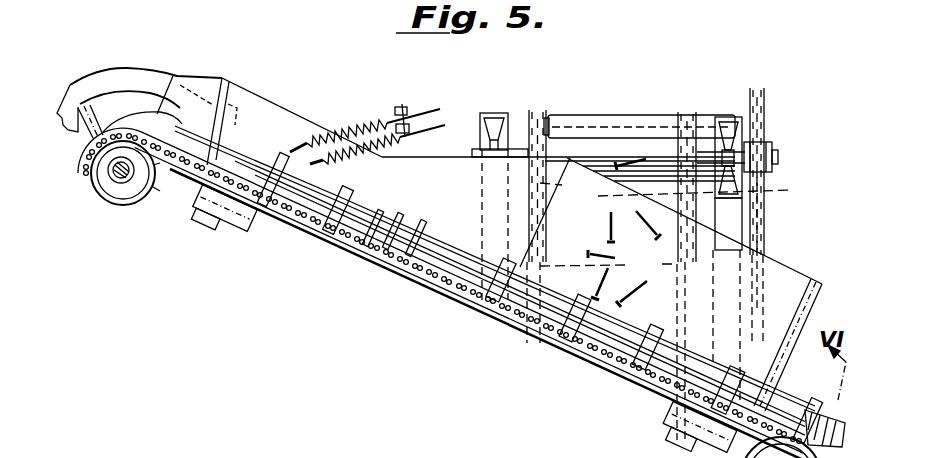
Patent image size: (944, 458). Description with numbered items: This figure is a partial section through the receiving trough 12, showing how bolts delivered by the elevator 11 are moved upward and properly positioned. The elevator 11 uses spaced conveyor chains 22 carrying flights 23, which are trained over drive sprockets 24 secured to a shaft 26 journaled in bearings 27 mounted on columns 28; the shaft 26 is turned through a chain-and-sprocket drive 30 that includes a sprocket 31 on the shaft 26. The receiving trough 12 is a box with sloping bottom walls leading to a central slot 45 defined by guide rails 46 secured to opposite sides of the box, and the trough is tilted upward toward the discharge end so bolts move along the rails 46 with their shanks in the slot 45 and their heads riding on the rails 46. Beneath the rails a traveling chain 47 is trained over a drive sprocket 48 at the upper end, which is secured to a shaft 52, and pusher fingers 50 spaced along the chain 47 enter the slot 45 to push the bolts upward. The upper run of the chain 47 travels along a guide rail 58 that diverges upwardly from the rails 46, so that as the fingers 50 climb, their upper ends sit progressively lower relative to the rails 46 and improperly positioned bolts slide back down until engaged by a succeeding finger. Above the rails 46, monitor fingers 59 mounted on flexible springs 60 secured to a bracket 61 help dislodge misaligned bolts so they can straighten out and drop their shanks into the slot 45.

The elevator 11 is at (617, 118).
The receiving trough 12 is at (783, 280).
The conveyor chains 22 is at (672, 264).
The flights 23 is at (568, 118).
The drive sprockets 24 is at (612, 197).
The shaft 26 is at (703, 150).
The bearings 27 is at (493, 122).
The columns 28 is at (482, 137).
The chain-and-sprocket drive 30 is at (762, 243).
The sprocket 31 is at (763, 115).
The slot 45 is at (613, 333).
The guide rails 46 is at (443, 238).
The traveling chain 47 is at (507, 311).
The drive sprocket 48 is at (139, 190).
The pusher fingers 50 is at (455, 283).
The shaft 52 is at (119, 180).
The guide rail 58 is at (377, 261).
The monitor fingers 59 is at (293, 150).
The flexible springs 60 is at (336, 143).
The bracket 61 is at (401, 108).